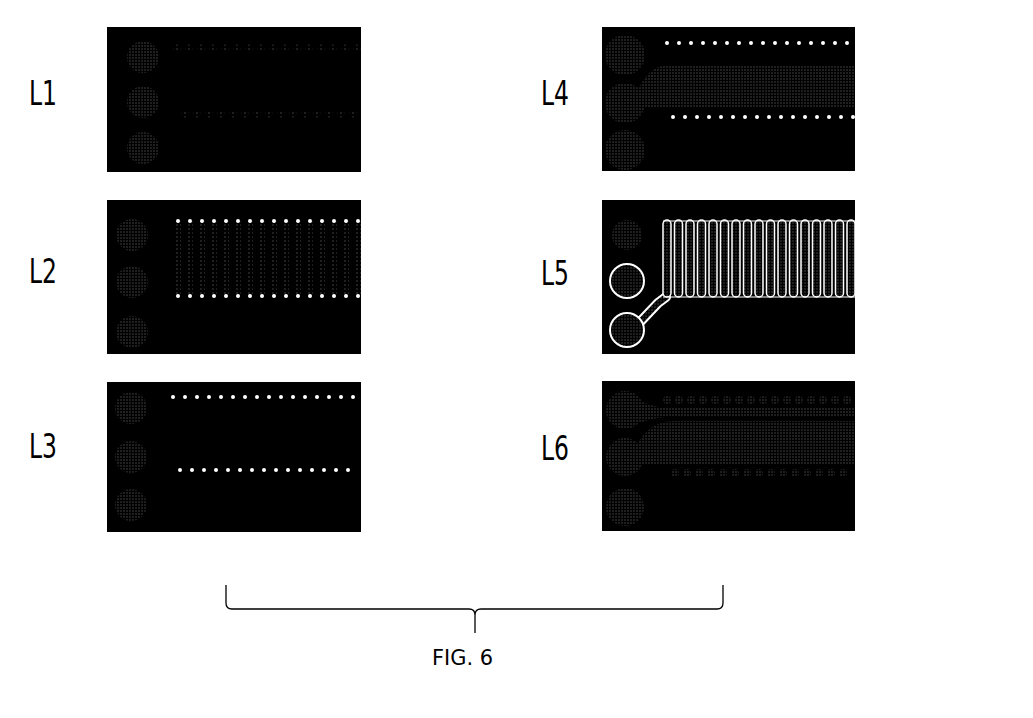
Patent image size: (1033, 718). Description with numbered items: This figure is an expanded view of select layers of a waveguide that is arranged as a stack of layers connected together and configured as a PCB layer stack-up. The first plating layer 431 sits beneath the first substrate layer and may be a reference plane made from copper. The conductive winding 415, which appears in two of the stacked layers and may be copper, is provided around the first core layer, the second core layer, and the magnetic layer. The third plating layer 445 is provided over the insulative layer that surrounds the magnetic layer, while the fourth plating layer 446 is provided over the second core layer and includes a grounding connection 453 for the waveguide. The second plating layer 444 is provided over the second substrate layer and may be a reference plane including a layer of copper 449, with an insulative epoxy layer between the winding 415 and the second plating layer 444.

The first plating layer 431 is at (348, 143).
The conductive winding 415 is at (340, 238).
The third plating layer 445 is at (345, 502).
The fourth plating layer 446 is at (838, 148).
The grounding connection 453 is at (840, 85).
The second plating layer 444 is at (838, 503).
The layer of copper 449 is at (840, 445).